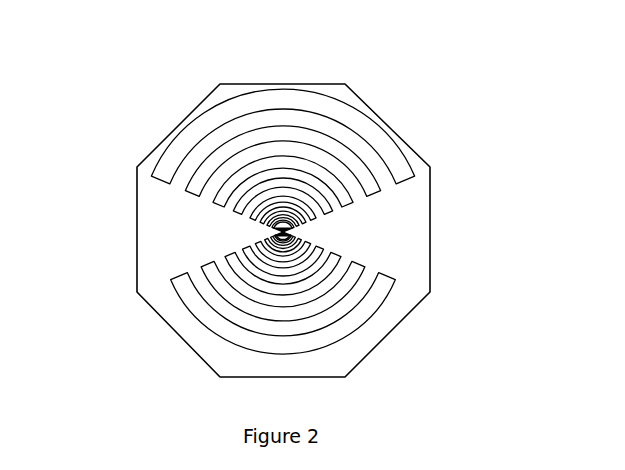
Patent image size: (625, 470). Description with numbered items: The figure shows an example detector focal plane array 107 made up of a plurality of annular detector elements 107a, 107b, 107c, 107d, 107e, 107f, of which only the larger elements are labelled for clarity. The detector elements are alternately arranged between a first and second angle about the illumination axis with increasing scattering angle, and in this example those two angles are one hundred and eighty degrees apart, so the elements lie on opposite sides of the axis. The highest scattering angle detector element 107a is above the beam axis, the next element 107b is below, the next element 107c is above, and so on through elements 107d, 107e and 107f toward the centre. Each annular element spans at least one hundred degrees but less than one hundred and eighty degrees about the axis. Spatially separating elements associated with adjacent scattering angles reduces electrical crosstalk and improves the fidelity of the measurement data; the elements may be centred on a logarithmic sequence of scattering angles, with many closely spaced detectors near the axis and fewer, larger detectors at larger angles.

The detector focal plane array 107 is at (404, 93).
The highest scattering angle detector element 107a is at (166, 184).
The detector element 107b is at (173, 276).
The detector element 107c is at (189, 194).
The detector element 107d is at (359, 261).
The detector element 107e is at (342, 206).
The detector element 107f is at (329, 253).